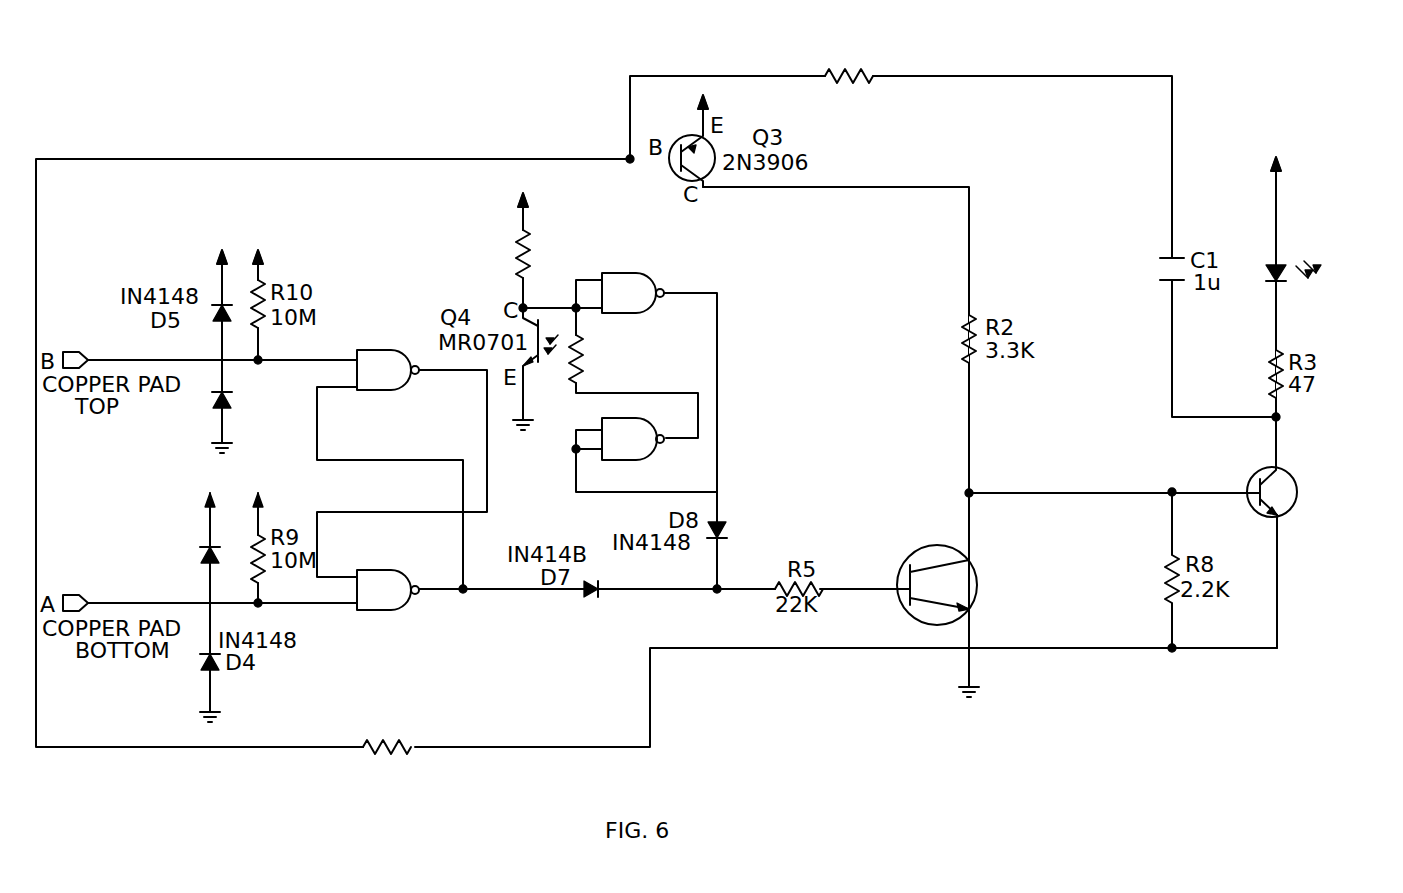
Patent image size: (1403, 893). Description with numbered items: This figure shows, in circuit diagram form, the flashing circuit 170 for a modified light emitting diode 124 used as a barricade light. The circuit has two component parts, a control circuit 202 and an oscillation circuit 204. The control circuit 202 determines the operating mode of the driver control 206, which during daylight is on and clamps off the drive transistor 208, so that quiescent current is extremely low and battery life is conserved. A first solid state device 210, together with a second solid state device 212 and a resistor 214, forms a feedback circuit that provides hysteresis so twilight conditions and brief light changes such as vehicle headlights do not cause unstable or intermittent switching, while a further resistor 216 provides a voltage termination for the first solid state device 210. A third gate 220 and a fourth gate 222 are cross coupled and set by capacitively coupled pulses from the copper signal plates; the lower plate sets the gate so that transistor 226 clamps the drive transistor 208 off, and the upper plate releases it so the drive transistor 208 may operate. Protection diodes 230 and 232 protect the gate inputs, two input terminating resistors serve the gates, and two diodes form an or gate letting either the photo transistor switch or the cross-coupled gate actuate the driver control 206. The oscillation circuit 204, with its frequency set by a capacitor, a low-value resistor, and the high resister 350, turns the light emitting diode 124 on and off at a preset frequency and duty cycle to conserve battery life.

The high resister 350 is at (879, 66).
The first solid state device 210 is at (644, 273).
The resistor 216 is at (513, 252).
The resistor 214 is at (627, 358).
The second solid state device 212 is at (601, 410).
The third gate 220 is at (394, 347).
The fourth gate 222 is at (373, 570).
The protection diode 232 is at (247, 415).
The protection diode 230 is at (97, 557).
The transistor 226 is at (957, 549).
The driver control 206 is at (1068, 574).
The oscillation circuit 204 is at (947, 662).
The control circuit 202 is at (250, 757).
The flashing circuit 170 is at (1049, 727).
The light emitting diode 124 is at (1303, 296).
The drive transistor 208 is at (1306, 525).